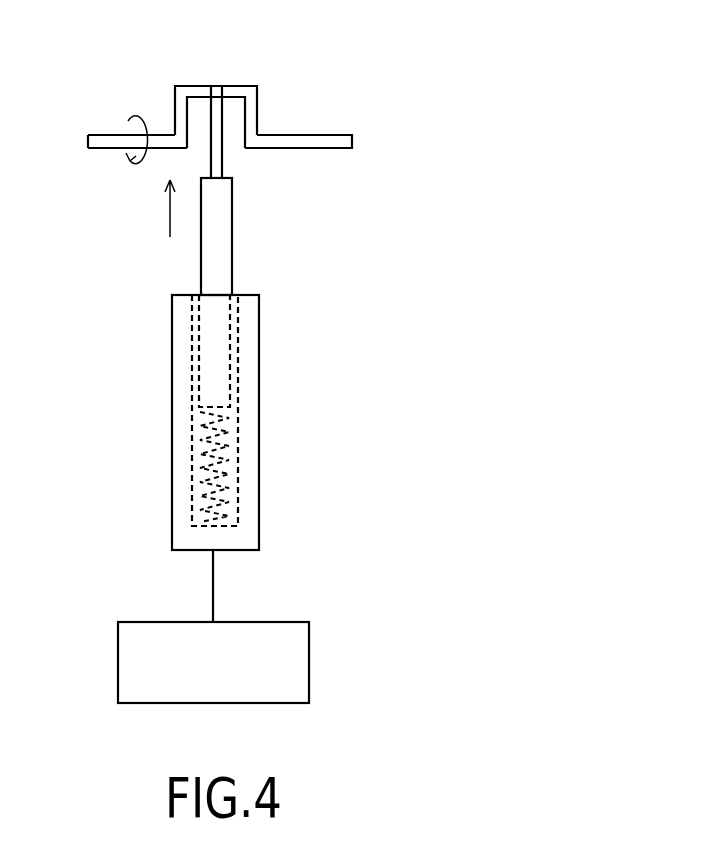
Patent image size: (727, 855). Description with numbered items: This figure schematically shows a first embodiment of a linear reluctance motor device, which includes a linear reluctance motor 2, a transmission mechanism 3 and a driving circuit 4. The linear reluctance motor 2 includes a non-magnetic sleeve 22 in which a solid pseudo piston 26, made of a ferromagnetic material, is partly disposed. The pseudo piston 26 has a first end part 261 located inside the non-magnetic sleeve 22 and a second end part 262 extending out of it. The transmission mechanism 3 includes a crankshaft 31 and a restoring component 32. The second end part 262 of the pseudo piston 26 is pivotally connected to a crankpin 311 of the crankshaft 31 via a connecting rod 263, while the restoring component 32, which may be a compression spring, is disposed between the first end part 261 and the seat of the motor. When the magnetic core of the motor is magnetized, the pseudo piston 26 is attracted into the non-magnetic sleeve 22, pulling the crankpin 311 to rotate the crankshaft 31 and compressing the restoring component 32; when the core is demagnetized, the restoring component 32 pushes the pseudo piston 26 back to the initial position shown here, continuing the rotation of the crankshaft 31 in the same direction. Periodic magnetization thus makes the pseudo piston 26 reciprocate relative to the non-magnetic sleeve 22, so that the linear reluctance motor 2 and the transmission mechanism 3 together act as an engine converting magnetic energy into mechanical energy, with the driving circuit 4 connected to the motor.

The linear reluctance motor 2 is at (223, 419).
The non-magnetic sleeve 22 is at (240, 467).
The pseudo piston 26 is at (256, 190).
The first end part 261 is at (220, 400).
The second end part 262 is at (223, 188).
The connecting rod 263 is at (222, 158).
The transmission mechanism 3 is at (253, 85).
The crankshaft 31 is at (113, 135).
The crankpin 311 is at (237, 86).
The restoring component 32 is at (232, 498).
The driving circuit 4 is at (309, 658).